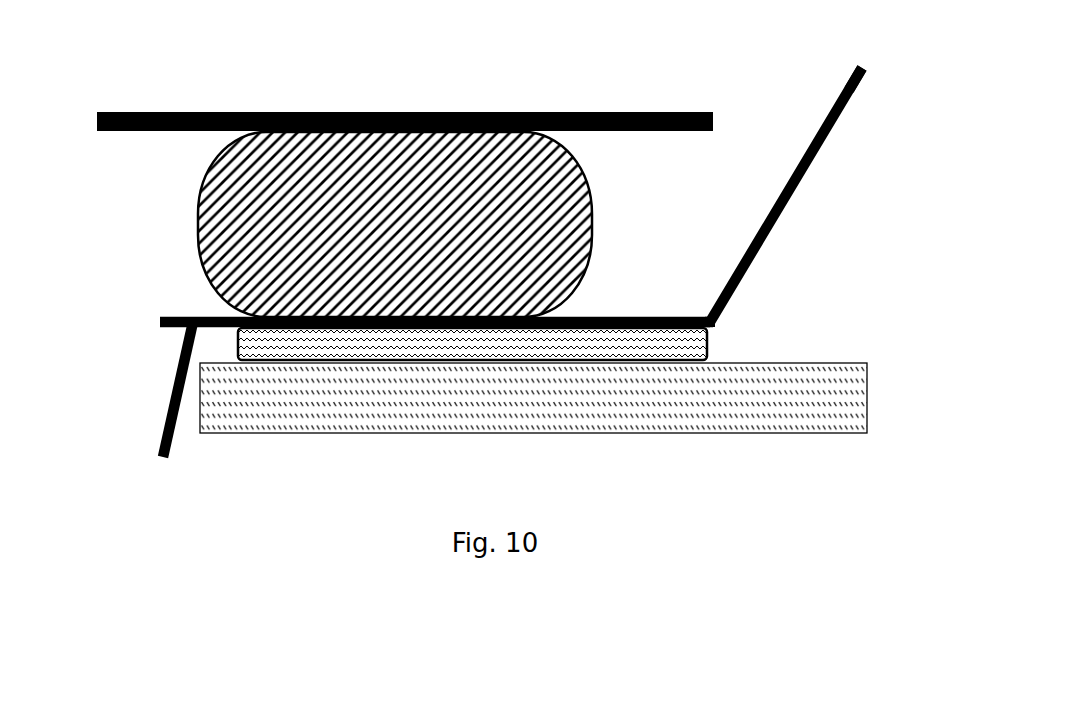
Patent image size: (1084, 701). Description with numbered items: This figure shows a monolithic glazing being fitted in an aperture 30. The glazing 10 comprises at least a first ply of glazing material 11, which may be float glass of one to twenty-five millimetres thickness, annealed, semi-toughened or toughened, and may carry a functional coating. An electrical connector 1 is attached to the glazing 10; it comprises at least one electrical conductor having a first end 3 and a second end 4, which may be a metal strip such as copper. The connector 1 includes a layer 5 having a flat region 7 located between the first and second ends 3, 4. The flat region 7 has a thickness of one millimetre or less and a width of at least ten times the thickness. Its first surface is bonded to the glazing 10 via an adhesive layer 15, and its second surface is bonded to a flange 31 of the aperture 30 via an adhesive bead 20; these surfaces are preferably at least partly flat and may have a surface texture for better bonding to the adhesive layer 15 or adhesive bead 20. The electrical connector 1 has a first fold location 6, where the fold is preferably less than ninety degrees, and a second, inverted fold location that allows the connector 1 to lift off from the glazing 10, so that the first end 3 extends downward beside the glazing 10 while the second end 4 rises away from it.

The electrical connector 1 is at (520, 251).
The first end 3 is at (158, 456).
The second end 4 is at (863, 65).
The layer 5 is at (787, 213).
The first fold location 6 is at (394, 275).
The flat region 7 is at (225, 307).
The glazing 10 is at (574, 377).
The first ply of glazing material 11 is at (868, 398).
The adhesive layer 15 is at (235, 347).
The adhesive bead 20 is at (197, 225).
The aperture 30 is at (388, 80).
The flange 31 is at (160, 86).